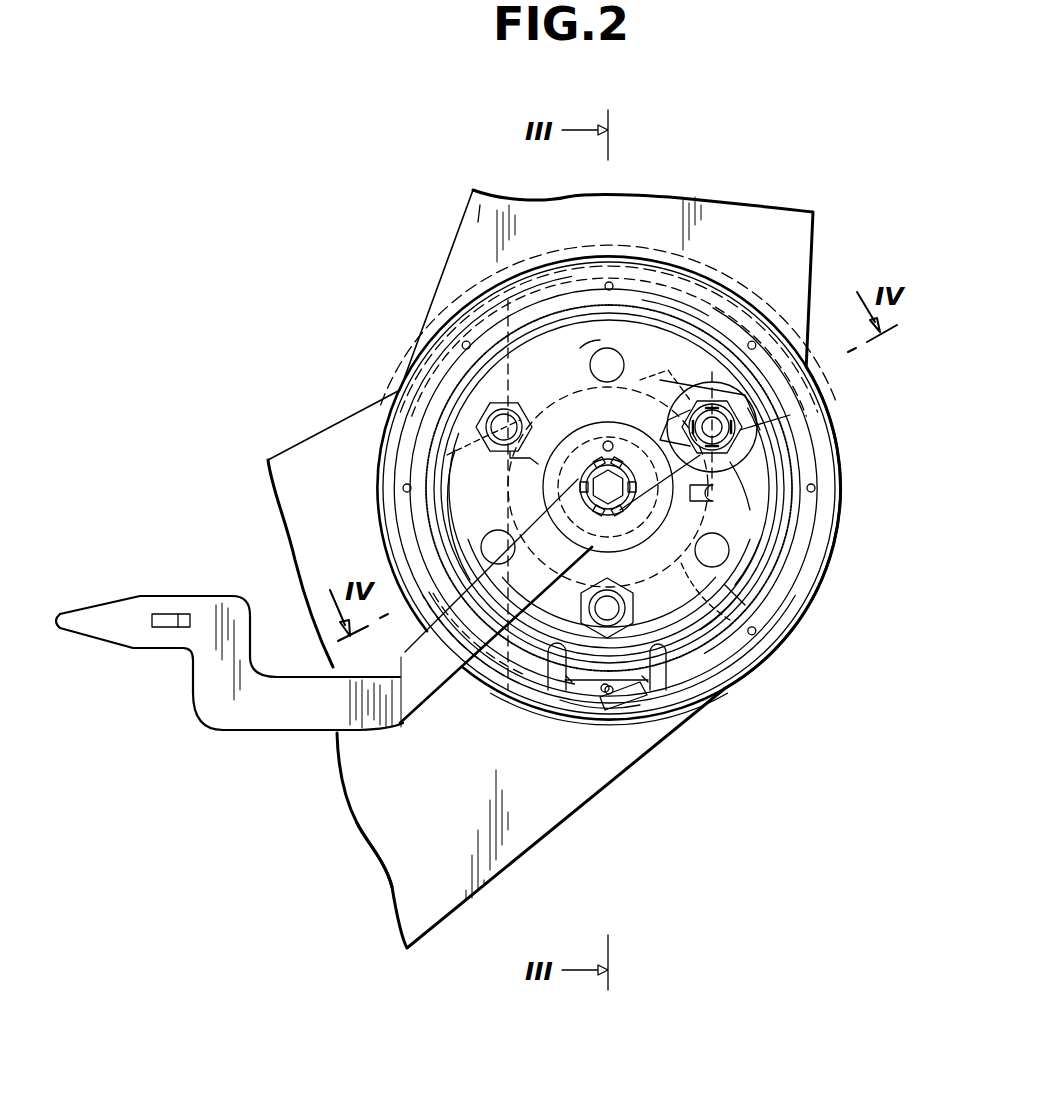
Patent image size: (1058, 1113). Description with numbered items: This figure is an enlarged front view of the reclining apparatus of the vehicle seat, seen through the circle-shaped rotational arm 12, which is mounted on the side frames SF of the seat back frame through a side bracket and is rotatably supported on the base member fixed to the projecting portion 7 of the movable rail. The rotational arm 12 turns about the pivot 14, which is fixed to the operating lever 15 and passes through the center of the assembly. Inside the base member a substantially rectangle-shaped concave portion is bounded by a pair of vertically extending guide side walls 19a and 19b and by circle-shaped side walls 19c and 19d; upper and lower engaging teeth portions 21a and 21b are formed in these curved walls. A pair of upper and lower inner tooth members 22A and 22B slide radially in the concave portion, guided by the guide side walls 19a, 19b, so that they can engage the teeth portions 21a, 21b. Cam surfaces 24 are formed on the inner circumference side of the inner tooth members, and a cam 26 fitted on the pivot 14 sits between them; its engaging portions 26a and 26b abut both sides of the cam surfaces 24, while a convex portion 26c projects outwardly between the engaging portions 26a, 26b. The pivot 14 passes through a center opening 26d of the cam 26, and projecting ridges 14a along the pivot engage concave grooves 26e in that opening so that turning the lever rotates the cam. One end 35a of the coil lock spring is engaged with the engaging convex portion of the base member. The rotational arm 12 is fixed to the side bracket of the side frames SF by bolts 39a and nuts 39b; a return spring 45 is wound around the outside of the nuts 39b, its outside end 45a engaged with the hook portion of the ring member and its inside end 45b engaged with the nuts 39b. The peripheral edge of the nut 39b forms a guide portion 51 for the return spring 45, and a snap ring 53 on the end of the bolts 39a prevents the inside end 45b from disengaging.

The side frame SF is at (475, 218).
The projecting portion 7 is at (422, 893).
The rotational arm 12 is at (775, 505).
The pivot 14 is at (585, 480).
The projecting ridges 14a is at (745, 560).
The operating lever 15 is at (235, 742).
The guide side wall 19a is at (512, 487).
The guide side wall 19b is at (745, 518).
The circle-shaped side wall 19c is at (635, 385).
The circle-shaped side wall 19d is at (660, 700).
The upper engaging teeth portion 21a is at (540, 352).
The lower engaging teeth portion 21b is at (560, 705).
The inner tooth member 22A is at (745, 395).
The inner tooth member 22B is at (740, 593).
The cam surfaces 24 is at (715, 410).
The cam 26 is at (630, 563).
The engaging portion 26a is at (447, 455).
The engaging portion 26b is at (740, 430).
The convex portion 26c is at (668, 370).
The center opening 26d is at (745, 605).
The concave grooves 26e is at (730, 620).
The one end of lock spring 35a is at (598, 348).
The bolts 39a is at (492, 405).
The nuts 39b is at (482, 425).
The return spring 45 is at (455, 450).
The outside end 45a is at (622, 705).
The inside end 45b is at (730, 462).
The guide portion 51 is at (740, 350).
The snap ring 53 is at (757, 442).